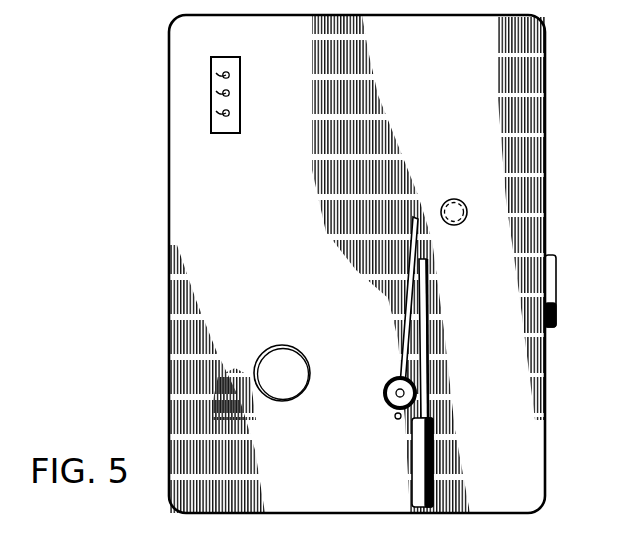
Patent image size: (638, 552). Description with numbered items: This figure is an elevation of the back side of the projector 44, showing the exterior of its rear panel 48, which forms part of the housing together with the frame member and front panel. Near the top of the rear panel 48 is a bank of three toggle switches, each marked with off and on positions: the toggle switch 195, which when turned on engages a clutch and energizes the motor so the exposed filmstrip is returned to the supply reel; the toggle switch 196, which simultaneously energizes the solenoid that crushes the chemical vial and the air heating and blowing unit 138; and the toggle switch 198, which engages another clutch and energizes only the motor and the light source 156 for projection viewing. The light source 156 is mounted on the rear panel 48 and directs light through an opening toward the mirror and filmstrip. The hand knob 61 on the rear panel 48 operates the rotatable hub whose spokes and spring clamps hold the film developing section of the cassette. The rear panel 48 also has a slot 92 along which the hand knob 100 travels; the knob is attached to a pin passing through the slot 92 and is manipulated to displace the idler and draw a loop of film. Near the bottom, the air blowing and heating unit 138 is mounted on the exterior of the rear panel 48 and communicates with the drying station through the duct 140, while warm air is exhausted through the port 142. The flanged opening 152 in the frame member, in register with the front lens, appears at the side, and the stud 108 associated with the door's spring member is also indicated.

The projector 44 is at (158, 249).
The rear panel 48 is at (281, 263).
The hand knob 61 is at (271, 392).
The slot 92 is at (404, 296).
The hand knob 100 is at (391, 379).
The stud 108 is at (612, 544).
The air blowing and heating unit 138 is at (433, 456).
The duct 140 is at (427, 382).
The port 142 is at (396, 419).
The flanged opening 152 is at (556, 270).
The light source 156 is at (452, 199).
The toggle switch 195 is at (228, 73).
The toggle switch 196 is at (199, 95).
The toggle switch 198 is at (235, 132).